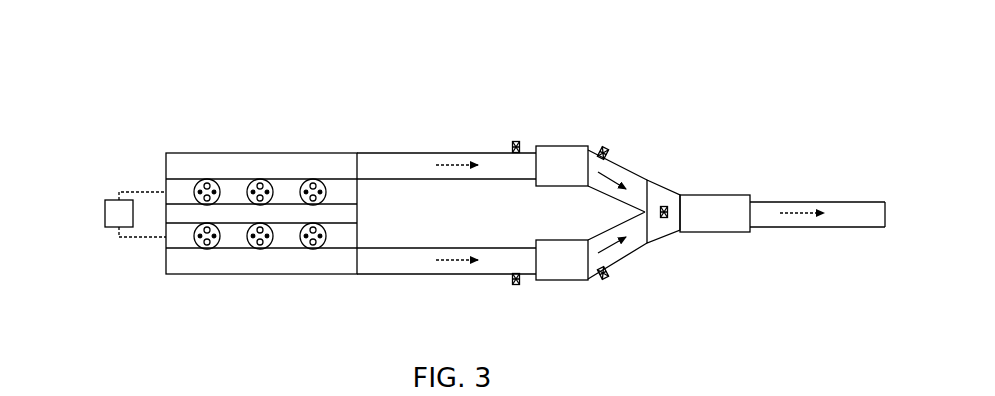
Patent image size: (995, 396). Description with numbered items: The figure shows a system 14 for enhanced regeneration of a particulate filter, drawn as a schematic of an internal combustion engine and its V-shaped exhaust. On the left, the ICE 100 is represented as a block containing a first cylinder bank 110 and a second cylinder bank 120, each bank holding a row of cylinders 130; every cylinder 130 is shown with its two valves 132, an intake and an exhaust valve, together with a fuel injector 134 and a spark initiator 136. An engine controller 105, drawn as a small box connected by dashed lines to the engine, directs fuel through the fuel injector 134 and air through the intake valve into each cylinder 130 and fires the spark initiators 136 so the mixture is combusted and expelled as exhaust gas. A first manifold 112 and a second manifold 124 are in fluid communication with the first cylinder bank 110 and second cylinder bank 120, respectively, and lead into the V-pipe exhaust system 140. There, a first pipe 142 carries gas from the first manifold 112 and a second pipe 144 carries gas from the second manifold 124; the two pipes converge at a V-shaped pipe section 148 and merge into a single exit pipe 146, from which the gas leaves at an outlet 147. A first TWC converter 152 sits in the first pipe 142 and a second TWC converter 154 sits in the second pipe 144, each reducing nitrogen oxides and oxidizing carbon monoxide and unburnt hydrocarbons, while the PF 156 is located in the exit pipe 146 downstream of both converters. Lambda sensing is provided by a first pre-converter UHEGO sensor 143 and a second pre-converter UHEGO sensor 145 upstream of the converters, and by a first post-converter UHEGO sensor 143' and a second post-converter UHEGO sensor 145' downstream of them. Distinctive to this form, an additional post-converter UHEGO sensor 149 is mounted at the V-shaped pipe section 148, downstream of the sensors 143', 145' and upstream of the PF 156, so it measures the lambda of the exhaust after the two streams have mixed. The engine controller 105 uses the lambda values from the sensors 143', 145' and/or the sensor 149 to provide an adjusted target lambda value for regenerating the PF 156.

The system 14 is at (684, 71).
The ICE 100 is at (209, 148).
The engine controller 105 is at (105, 210).
The first cylinder bank 110 is at (161, 186).
The first manifold 112 is at (320, 162).
The second cylinder bank 120 is at (161, 246).
The second manifold 124 is at (183, 267).
The cylinder 130 is at (276, 186).
The valves 132 is at (263, 233).
The fuel injector 134 is at (247, 238).
The spark initiator 136 is at (272, 238).
The V-pipe exhaust system 140 is at (654, 131).
The first pipe 142 is at (428, 158).
The first pre-converter UHEGO sensor 143 is at (491, 131).
The first post-converter UHEGO sensor 143' is at (602, 131).
The second pipe 144 is at (410, 265).
The second pre-converter UHEGO sensor 145 is at (492, 295).
The second post-converter UHEGO sensor 145' is at (600, 295).
The exit pipe 146 is at (803, 200).
The outlet 147 is at (885, 228).
The V-shaped pipe section 148 is at (648, 256).
The post-converter UHEGO sensor 149 is at (667, 220).
The first TWC converter 152 is at (567, 153).
The second TWC converter 154 is at (562, 272).
The PF 156 is at (713, 197).